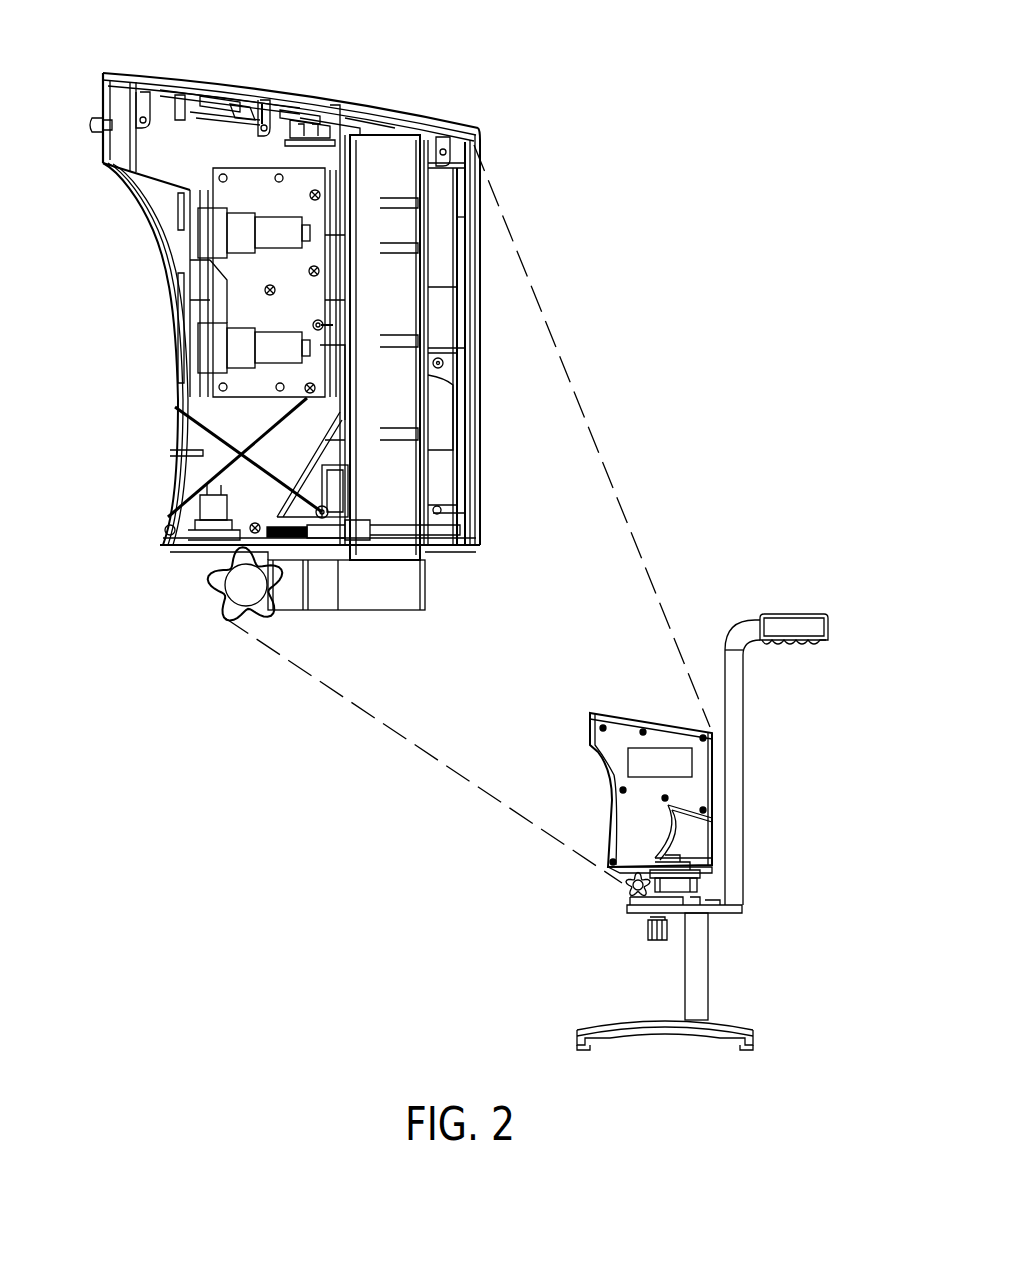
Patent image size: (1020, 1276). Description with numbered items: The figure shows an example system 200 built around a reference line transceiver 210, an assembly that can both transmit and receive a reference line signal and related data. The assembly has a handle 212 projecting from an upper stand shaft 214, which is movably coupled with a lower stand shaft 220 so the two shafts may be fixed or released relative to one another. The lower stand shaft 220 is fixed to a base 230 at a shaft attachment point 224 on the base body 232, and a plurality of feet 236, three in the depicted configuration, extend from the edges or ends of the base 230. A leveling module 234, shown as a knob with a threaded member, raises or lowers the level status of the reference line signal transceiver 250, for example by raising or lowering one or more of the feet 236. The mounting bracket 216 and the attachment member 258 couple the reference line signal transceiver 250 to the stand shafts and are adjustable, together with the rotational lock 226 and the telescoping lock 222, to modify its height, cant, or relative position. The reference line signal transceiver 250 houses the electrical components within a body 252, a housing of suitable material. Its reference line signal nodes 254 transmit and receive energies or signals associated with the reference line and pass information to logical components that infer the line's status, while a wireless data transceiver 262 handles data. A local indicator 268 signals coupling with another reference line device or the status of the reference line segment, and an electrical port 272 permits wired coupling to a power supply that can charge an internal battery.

The system 200 is at (720, 190).
The reference line transceiver 210 is at (735, 600).
The handle 212 is at (800, 610).
The upper stand shaft 214 is at (738, 777).
The mounting bracket 216 is at (628, 899).
The lower stand shaft 220 is at (710, 948).
The telescoping lock 222 is at (653, 866).
The shaft attachment point 224 is at (715, 1020).
The rotational lock 226 is at (625, 884).
The base 230 is at (590, 1028).
The base body 232 is at (665, 1030).
The leveling module 234 is at (648, 928).
The feet 236 is at (755, 1045).
The reference line signal transceiver 250 is at (219, 75).
The body 252 is at (482, 268).
The reference line signal nodes 254 is at (200, 240).
The attachment member 258 is at (430, 592).
The wireless data transceiver 262 is at (245, 385).
The local indicator 268 is at (101, 128).
The electrical port 272 is at (215, 540).